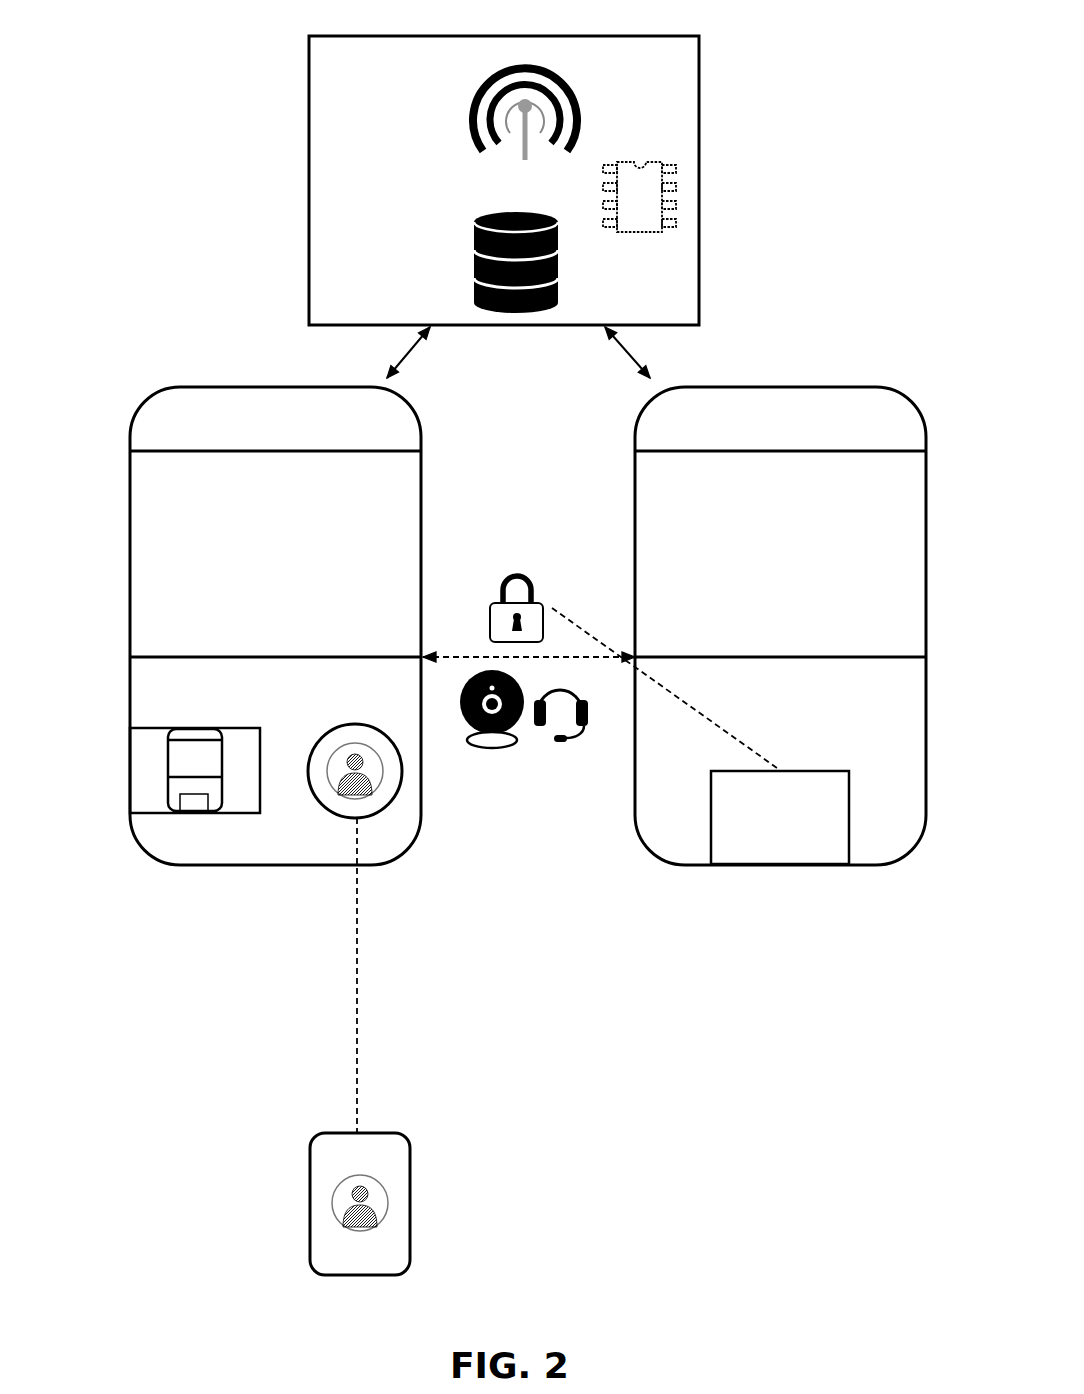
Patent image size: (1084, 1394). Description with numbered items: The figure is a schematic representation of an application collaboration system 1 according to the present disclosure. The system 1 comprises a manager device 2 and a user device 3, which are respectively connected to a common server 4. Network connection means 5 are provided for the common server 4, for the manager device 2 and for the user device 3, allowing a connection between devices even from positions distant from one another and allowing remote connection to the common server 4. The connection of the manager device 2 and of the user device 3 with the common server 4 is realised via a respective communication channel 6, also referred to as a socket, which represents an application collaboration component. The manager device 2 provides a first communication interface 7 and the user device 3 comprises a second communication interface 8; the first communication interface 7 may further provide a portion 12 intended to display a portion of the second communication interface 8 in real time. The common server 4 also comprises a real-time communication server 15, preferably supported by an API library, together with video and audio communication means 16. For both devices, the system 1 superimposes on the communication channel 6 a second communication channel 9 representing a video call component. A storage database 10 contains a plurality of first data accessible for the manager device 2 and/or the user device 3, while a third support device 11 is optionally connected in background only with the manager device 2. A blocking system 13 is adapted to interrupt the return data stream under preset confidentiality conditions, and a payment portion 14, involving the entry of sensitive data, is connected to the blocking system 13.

The application collaboration system 1 is at (797, 128).
The manager device 2 is at (135, 852).
The user device 3 is at (916, 858).
The common server 4 is at (305, 165).
The network connection means 5 is at (472, 88).
The communication channel 6 is at (622, 353).
The first communication interface 7 is at (293, 688).
The second communication interface 8 is at (690, 768).
The second communication channel 9 is at (463, 652).
The storage database 10 is at (472, 255).
The third support device 11 is at (405, 1135).
The portion 12 is at (190, 723).
The blocking system 13 is at (523, 575).
The payment portion 14 is at (810, 843).
The real-time communication server 15 is at (665, 193).
The video and audio communication means 16 is at (520, 745).